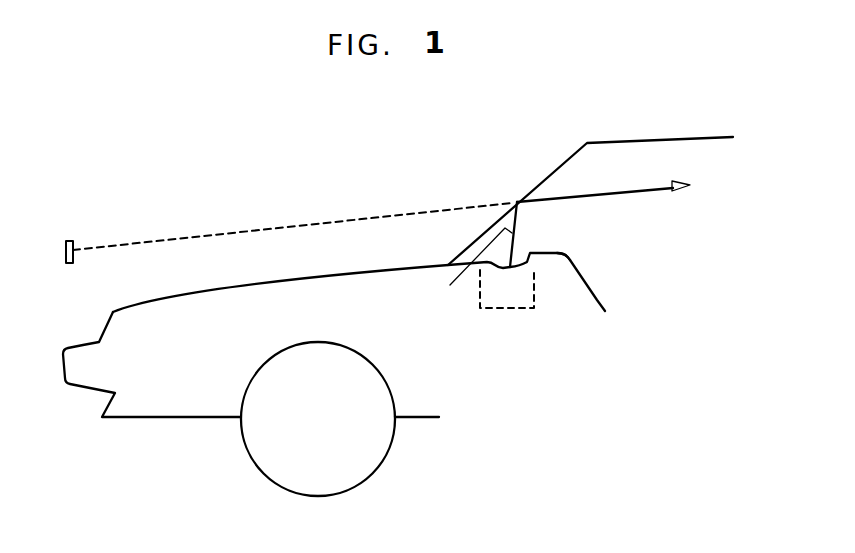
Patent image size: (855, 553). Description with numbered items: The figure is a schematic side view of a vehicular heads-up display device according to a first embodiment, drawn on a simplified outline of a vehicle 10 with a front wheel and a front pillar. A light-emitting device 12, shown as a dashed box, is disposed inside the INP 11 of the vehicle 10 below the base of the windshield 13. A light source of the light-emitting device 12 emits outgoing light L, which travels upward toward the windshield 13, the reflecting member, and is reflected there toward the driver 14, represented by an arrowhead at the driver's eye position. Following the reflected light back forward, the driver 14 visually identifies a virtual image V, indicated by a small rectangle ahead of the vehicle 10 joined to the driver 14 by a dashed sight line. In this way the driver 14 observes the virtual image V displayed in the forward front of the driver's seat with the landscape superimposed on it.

The vehicle 10 is at (170, 417).
The INP 11 is at (568, 257).
The light-emitting device 12 is at (507, 310).
The windshield 13 is at (542, 181).
The driver 14 is at (683, 180).
The virtual image V is at (66, 244).
The outgoing light L is at (473, 265).